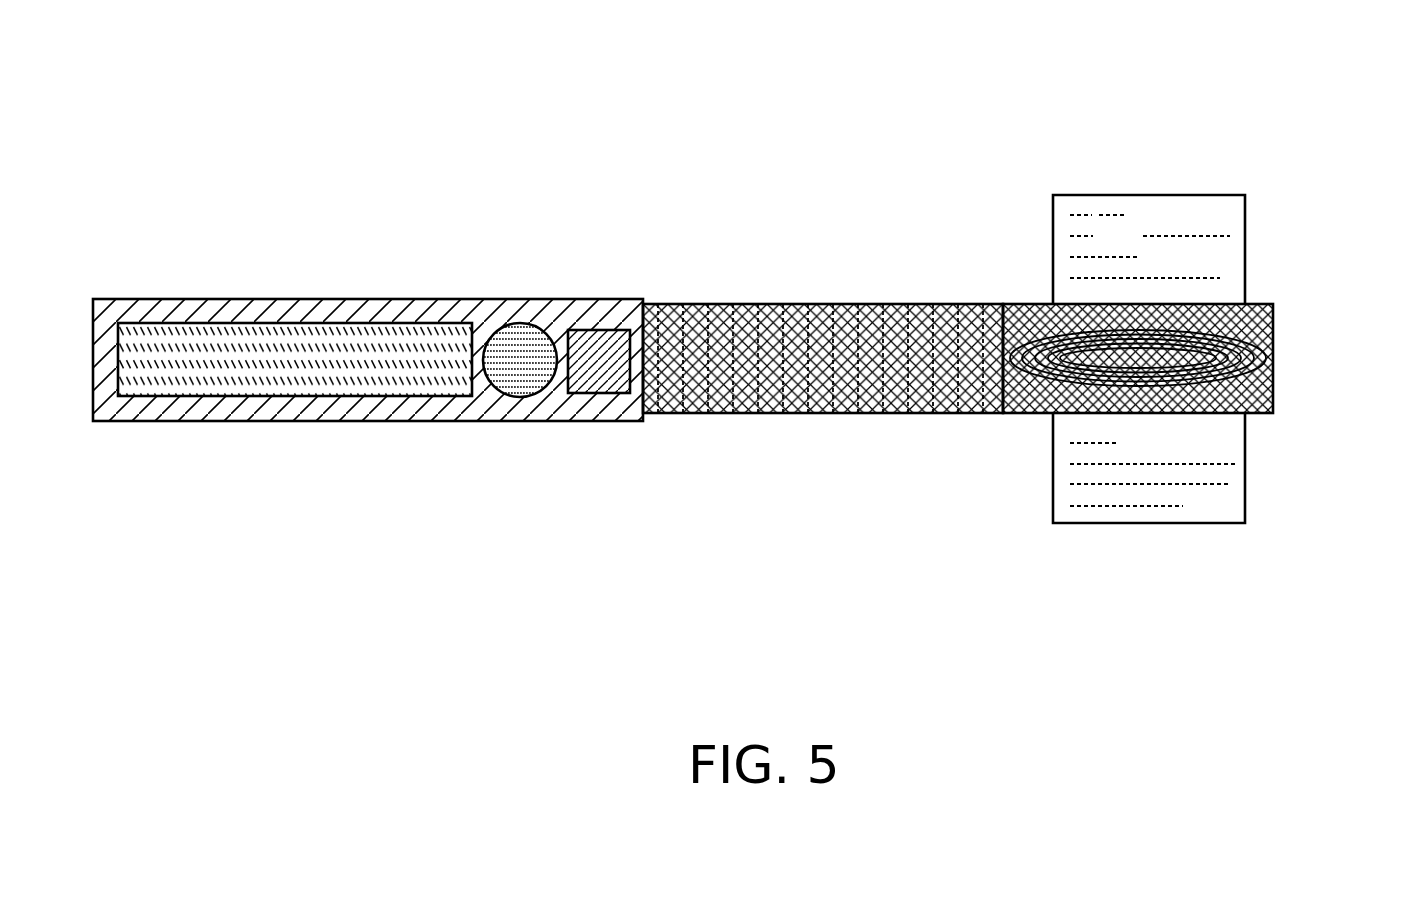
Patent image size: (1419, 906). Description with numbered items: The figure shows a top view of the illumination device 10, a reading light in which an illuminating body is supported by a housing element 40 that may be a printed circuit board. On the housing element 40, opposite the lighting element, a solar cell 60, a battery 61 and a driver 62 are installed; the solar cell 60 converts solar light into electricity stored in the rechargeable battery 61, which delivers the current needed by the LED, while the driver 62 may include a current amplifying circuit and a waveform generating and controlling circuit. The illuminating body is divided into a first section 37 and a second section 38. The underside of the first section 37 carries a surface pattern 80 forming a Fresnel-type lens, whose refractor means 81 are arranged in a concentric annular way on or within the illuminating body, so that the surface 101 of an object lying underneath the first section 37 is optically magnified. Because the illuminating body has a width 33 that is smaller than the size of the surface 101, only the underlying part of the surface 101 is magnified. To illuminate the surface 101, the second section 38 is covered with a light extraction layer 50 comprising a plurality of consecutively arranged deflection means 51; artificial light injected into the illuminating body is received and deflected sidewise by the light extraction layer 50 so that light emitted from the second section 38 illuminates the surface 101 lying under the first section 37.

The illumination device 10 is at (1193, 126).
The width 33 is at (1362, 418).
The first section 37 is at (1157, 492).
The second section 38 is at (823, 492).
The housing element 40 is at (146, 408).
The light extraction layer 50 is at (772, 407).
The deflection means 51 is at (884, 398).
The solar cell 60 is at (295, 350).
The battery 61 is at (512, 350).
The driver 62 is at (597, 350).
The surface pattern 80 is at (1043, 386).
The refractor means 81 is at (1245, 386).
The surface 101 is at (1220, 212).